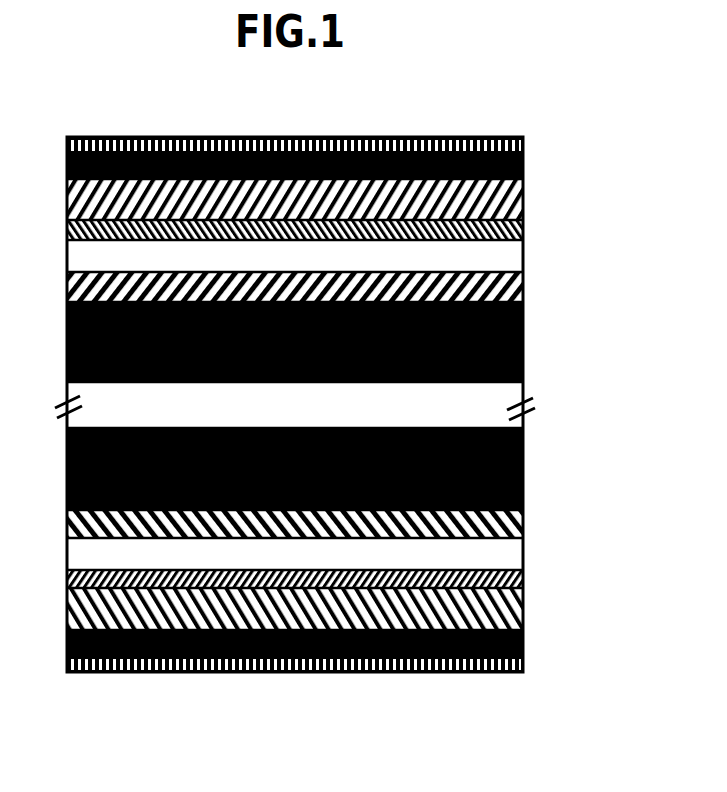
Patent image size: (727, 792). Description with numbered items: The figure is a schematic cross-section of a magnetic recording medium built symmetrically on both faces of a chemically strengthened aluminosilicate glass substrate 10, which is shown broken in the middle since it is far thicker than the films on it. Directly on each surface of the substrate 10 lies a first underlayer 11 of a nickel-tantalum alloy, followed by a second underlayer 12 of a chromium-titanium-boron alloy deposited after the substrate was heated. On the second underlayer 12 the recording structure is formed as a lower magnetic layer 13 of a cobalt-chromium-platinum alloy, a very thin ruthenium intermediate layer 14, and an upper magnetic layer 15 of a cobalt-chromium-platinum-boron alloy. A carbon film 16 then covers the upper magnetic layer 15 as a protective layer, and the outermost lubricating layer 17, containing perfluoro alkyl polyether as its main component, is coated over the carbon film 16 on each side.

The aluminosilicate glass substrate 10 is at (508, 392).
The first underlayers 11 is at (523, 331).
The second underlayers 12 is at (520, 287).
The lower magnetic layers 13 is at (507, 263).
The Ru intermediate layers 14 is at (523, 224).
The upper magnetic layers 15 is at (517, 192).
The carbon films 16 is at (523, 163).
The lubricating layers 17 is at (523, 137).